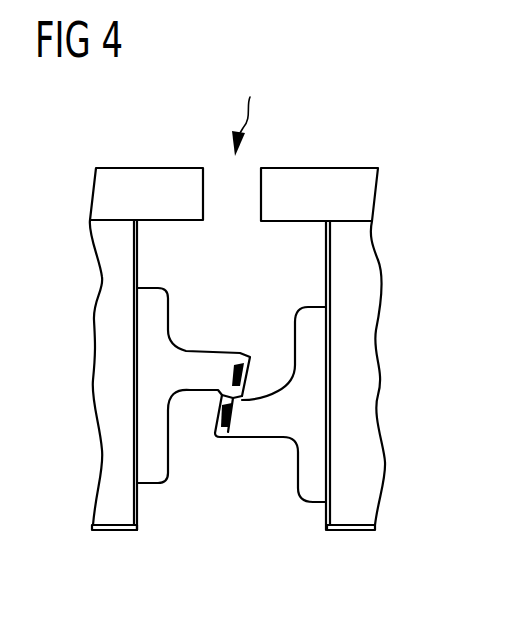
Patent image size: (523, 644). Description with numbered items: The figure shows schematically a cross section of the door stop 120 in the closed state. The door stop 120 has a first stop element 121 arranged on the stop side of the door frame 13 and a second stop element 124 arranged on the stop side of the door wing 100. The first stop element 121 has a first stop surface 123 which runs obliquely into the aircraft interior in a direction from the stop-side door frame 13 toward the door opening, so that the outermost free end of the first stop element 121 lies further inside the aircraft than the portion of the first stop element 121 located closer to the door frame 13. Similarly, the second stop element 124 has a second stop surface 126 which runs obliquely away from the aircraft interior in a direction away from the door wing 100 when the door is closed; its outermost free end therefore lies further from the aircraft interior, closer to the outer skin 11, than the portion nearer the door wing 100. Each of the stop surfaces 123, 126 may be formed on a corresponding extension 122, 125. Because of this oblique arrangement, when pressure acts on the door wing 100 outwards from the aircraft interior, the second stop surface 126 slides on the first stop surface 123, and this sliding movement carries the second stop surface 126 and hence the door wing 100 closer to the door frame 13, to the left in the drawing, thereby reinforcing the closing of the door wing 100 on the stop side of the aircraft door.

The outer skin 11 is at (144, 178).
The door frame 13 is at (112, 528).
The door wing 100 is at (322, 178).
The door stop 120 is at (251, 110).
The first stop element 121 is at (150, 381).
The extension 122 is at (212, 363).
The first stop surface 123 is at (246, 357).
The second stop element 124 is at (320, 413).
The extension 125 is at (262, 427).
The second stop surface 126 is at (227, 439).